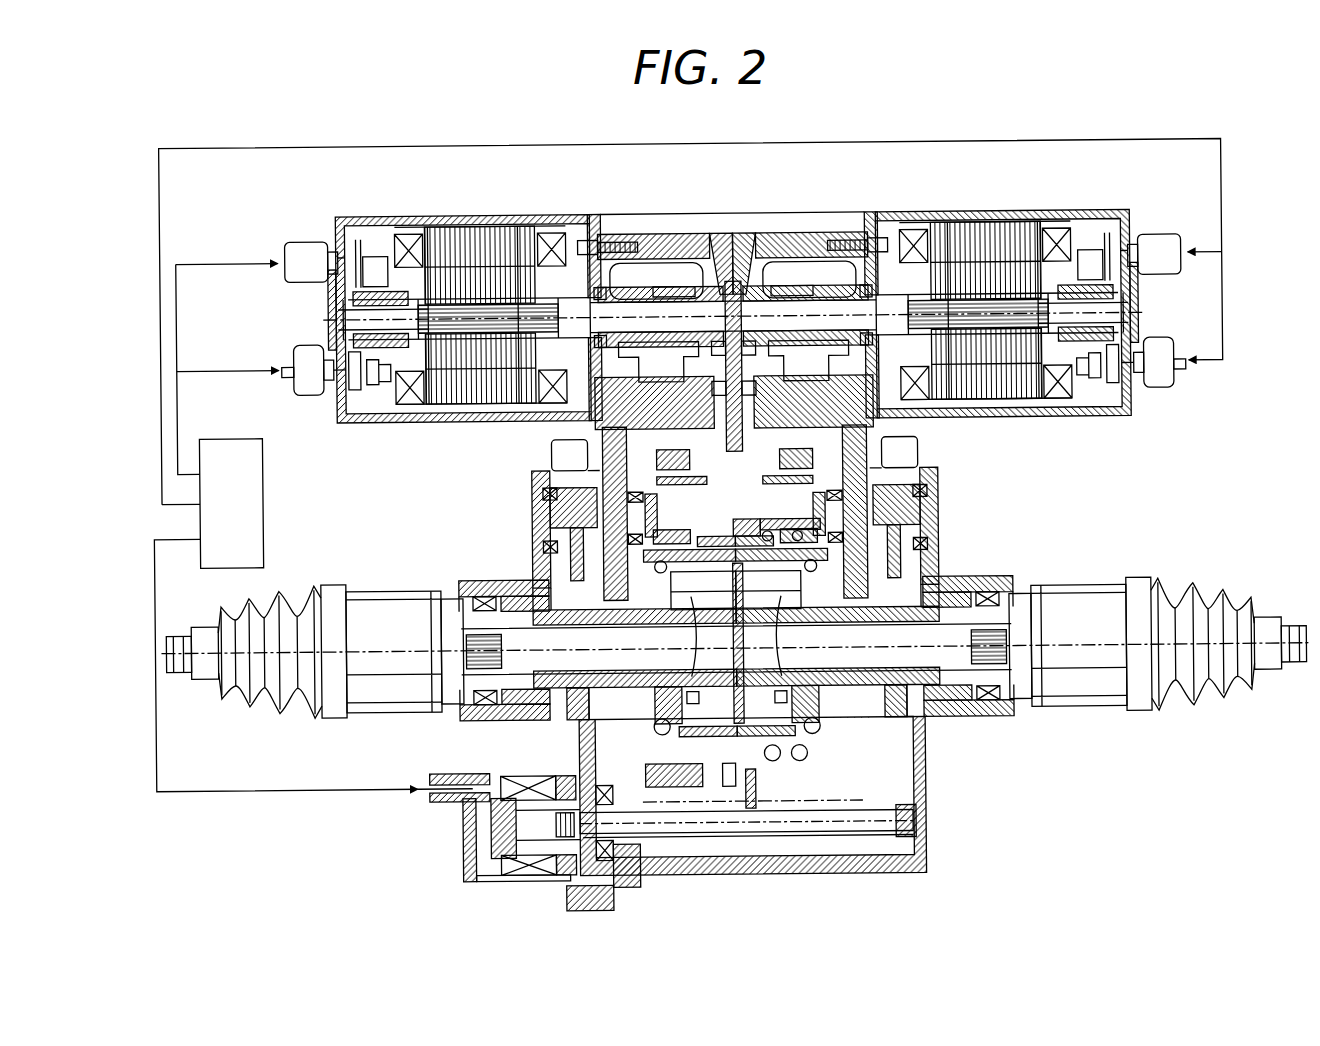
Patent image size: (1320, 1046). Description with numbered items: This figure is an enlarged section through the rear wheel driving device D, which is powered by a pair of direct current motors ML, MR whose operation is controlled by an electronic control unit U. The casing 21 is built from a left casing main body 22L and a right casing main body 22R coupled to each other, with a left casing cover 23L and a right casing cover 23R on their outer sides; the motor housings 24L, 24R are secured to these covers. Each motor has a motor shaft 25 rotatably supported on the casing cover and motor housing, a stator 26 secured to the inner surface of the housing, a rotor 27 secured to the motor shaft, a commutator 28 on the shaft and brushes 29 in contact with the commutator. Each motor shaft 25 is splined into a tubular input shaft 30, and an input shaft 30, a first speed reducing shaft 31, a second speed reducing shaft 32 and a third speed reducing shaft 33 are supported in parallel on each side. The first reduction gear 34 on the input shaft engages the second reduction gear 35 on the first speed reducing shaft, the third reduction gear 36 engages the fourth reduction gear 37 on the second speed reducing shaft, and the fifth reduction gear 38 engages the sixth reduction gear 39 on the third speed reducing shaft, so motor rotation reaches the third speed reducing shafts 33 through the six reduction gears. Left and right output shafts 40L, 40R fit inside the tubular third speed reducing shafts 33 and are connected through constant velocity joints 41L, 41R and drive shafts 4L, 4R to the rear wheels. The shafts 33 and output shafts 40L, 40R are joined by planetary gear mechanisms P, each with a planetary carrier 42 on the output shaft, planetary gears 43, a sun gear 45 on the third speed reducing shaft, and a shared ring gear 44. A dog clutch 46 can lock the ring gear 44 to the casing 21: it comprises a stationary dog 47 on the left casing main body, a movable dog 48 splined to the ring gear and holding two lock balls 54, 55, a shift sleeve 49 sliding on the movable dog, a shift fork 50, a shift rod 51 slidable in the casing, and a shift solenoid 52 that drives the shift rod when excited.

The left-hand side motor ML is at (375, 213).
The right-hand side motor MR is at (1080, 216).
The rear wheel driving device D is at (733, 228).
The planetary gear mechanism P is at (700, 616).
The electronic control unit U is at (243, 515).
The left drive shaft 4L is at (178, 650).
The right drive shaft 4R is at (1292, 640).
The casing 21 is at (703, 238).
The left casing main body 22L is at (640, 241).
The right casing main body 22R is at (855, 246).
The left casing cover 23L is at (568, 215).
The right casing cover 23R is at (905, 227).
The motor housing 24L is at (455, 232).
The motor housing 24R is at (1005, 235).
The motor shaft 25 is at (456, 270).
The stator 26 is at (445, 405).
The rotor 27 is at (517, 405).
The commutator 28 is at (385, 390).
The brush 29 is at (340, 288).
The input shaft 30 is at (665, 297).
The first speed reducing shaft 31 is at (734, 402).
The second speed reducing shaft 32 is at (735, 532).
The third speed reducing shaft 33 is at (737, 714).
The first reduction gear 34 is at (668, 290).
The second reduction gear 35 is at (734, 368).
The third reduction gear 36 is at (729, 357).
The fourth reduction gear 37 is at (734, 463).
The fifth reduction gear 38 is at (734, 512).
The sixth reduction gear 39 is at (555, 742).
The left output shaft 40L is at (598, 650).
The right output shaft 40R is at (873, 648).
The constant velocity joint 41L is at (380, 600).
The constant velocity joint 41R is at (1082, 600).
The planetary carrier 42 is at (655, 738).
The planetary gear 43 is at (727, 540).
The ring gear 44 is at (708, 540).
The sun gear 45 is at (737, 705).
The dog clutch 46 is at (770, 855).
The stationary dog 47 is at (680, 786).
The movable dog 48 is at (726, 790).
The shift sleeve 49 is at (812, 780).
The shift fork 50 is at (755, 795).
The shift rod 51 is at (915, 828).
The shift solenoid 52 is at (487, 770).
The lock ball 54 is at (766, 534).
The lock ball 55 is at (798, 534).